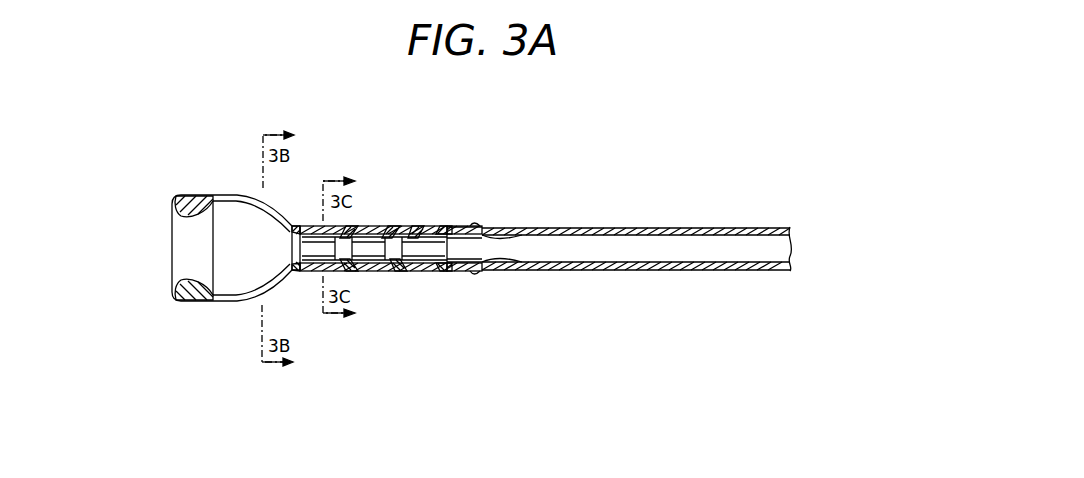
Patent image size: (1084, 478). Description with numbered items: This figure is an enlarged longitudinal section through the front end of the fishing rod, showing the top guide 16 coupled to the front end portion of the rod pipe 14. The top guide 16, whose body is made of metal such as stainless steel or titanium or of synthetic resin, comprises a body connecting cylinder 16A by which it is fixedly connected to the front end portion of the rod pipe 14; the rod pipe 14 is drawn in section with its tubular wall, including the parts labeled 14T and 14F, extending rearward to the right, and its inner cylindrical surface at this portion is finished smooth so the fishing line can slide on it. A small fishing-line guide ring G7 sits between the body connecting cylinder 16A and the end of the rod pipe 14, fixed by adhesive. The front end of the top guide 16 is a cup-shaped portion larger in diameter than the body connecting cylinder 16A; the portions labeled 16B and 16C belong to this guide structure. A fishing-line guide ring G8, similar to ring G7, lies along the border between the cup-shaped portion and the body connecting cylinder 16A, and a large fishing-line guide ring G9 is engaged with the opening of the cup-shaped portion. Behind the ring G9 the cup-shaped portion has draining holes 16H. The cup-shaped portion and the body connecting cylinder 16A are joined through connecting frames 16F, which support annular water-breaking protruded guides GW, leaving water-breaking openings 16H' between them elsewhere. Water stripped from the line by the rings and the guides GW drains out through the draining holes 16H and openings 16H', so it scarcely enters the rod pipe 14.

The rod pipe 14 is at (633, 272).
The cable sheath tip 14T is at (555, 229).
The cable sheath 14F is at (736, 228).
The top guide 16 is at (648, 412).
The body connecting cylinder 16A is at (437, 273).
The terminal rear crimp portion 16B is at (480, 227).
The terminal bell portion 16C is at (201, 302).
The connecting frames 16F is at (432, 228).
The draining holes 16H is at (272, 316).
The water-breaking openings 16H' is at (384, 197).
The fishing-line guide ring G7 is at (450, 273).
The fishing-line guide ring G8 is at (293, 273).
The fishing-line guide ring G9 is at (178, 302).
The annular water-breaking protruded guides GW is at (355, 272).